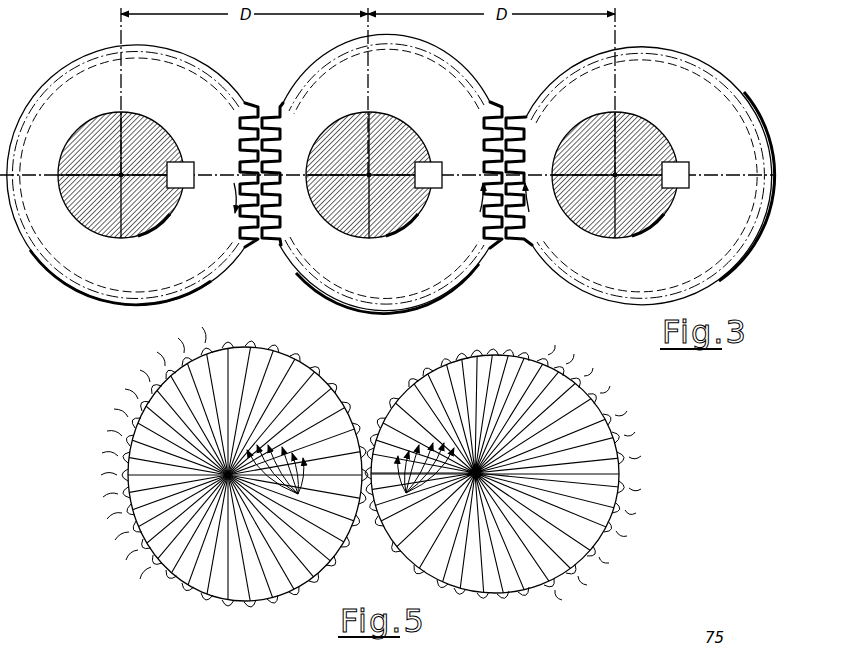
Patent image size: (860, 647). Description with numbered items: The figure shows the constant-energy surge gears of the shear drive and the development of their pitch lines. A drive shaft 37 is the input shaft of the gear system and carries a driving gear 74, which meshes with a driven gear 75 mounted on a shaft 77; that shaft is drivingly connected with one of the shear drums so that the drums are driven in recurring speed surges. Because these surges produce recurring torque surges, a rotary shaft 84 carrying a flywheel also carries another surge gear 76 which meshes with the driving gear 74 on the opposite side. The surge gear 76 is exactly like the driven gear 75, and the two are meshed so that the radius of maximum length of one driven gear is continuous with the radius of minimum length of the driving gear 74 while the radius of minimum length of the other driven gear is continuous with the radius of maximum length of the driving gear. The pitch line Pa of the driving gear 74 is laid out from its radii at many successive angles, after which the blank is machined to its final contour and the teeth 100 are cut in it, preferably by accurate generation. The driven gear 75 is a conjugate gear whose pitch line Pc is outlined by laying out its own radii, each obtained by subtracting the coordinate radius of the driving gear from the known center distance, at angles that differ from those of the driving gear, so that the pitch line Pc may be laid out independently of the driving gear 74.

In FIG. 3, the surge gear 76 is at (64, 62).
In FIG. 3, the rotary shaft 84 is at (128, 120).
In FIG. 3, the teeth 100 is at (263, 92).
In FIG. 3, the drive shaft 37 is at (386, 121).
In FIG. 3, the driving gear 74 is at (468, 65).
In FIG. 5, the driving gear 74 is at (283, 347).
In FIG. 3, the shaft 77 is at (641, 121).
In FIG. 3, the driven gear 75 is at (681, 50).
In FIG. 5, the driven gear 75 is at (554, 361).
In FIG. 3, the pitch line of driving gear Pa is at (433, 50).
In FIG. 5, the pitch line of driving gear Pa is at (310, 372).
In FIG. 3, the pitch line of driven gear Pc is at (721, 73).
In FIG. 5, the pitch line of driven gear Pc is at (608, 406).